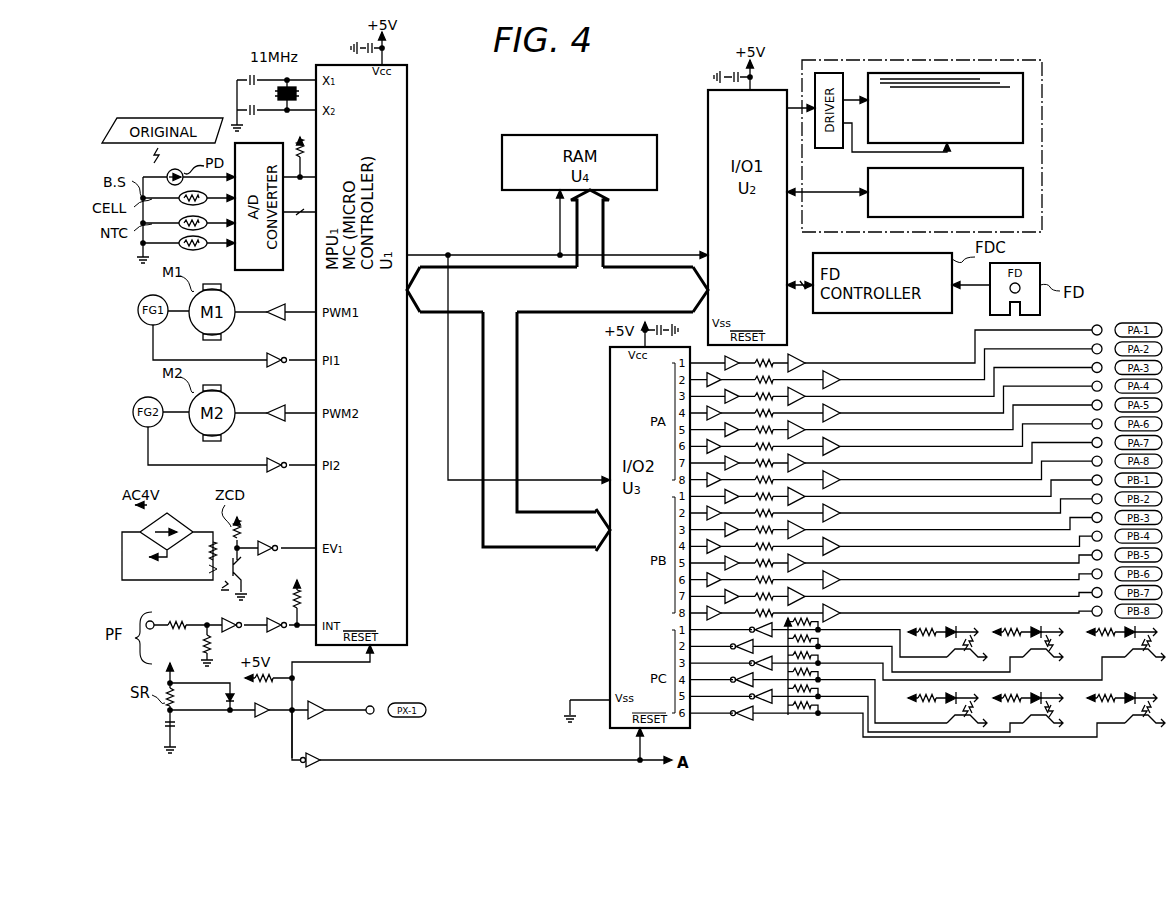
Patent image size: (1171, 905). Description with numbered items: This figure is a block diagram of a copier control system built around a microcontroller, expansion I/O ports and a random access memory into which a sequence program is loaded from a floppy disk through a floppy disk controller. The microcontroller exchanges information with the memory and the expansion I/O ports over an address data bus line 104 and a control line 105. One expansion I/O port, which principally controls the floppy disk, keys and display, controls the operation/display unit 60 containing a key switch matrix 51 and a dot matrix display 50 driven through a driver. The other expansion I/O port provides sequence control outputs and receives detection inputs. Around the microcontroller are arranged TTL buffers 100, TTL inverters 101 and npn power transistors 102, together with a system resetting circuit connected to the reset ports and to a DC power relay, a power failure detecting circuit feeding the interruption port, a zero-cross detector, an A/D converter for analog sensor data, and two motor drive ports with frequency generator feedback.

The CCD dot matrix 50 is at (1023, 85).
The operation/display unit 60 is at (1046, 103).
The key switch matrix keys 51~56, K24, K26 51 is at (1006, 192).
The TTL buffers 100 is at (265, 715).
The TTL inverters 101 is at (276, 624).
The npn power transistors 102 is at (320, 717).
The address data bus line 104 is at (556, 314).
The control line 105 is at (423, 253).